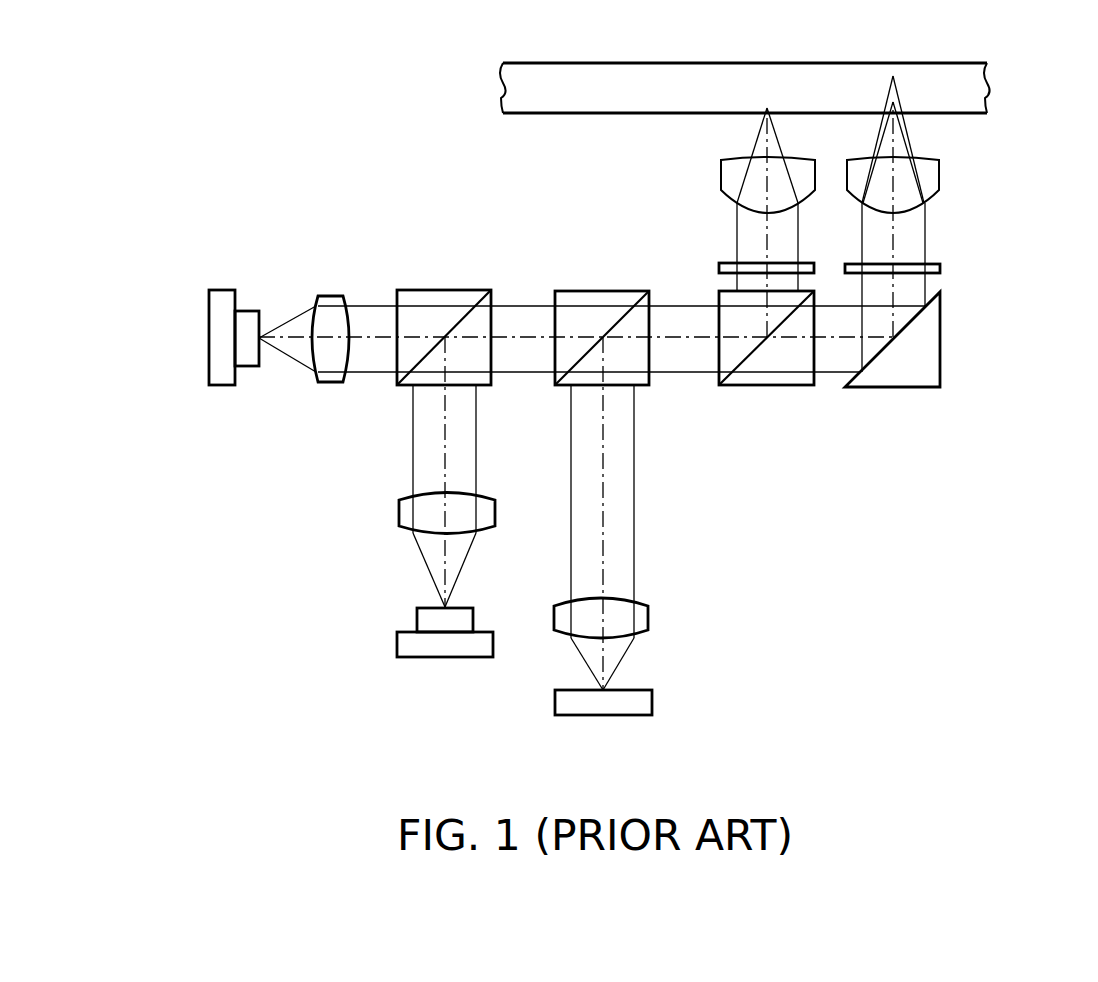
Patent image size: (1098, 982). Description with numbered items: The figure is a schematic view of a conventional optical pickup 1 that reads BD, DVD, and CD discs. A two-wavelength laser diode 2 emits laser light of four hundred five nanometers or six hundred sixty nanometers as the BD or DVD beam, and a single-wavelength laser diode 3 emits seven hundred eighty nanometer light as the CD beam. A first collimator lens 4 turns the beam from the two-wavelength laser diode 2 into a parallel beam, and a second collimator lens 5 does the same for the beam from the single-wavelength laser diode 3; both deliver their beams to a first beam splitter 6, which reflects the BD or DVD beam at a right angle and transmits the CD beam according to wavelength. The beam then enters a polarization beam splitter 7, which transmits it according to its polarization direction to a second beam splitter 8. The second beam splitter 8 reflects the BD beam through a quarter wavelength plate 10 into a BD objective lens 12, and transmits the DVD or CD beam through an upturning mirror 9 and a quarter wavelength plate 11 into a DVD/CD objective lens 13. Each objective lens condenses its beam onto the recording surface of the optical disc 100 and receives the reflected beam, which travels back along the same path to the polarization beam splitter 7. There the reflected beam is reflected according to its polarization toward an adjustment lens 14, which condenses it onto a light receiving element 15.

The optical pickup 1 is at (1051, 526).
The two-wavelength laser diode 2 is at (397, 645).
The single-wavelength laser diode 3 is at (209, 333).
The first collimator lens 4 is at (399, 510).
The second collimator lens 5 is at (325, 296).
The first beam splitter 6 is at (442, 290).
The polarization beam splitter 7 is at (600, 291).
The second beam splitter 8 is at (767, 388).
The upturning mirror 9 is at (893, 390).
The quarter wavelength plate 10 is at (719, 268).
The quarter wavelength plate 11 is at (941, 268).
The BD objective lens 12 is at (721, 168).
The DVD/CD objective lens 13 is at (940, 170).
The adjustment lens 14 is at (649, 614).
The light receiving element 15 is at (653, 700).
The optical disc 100 is at (743, 63).